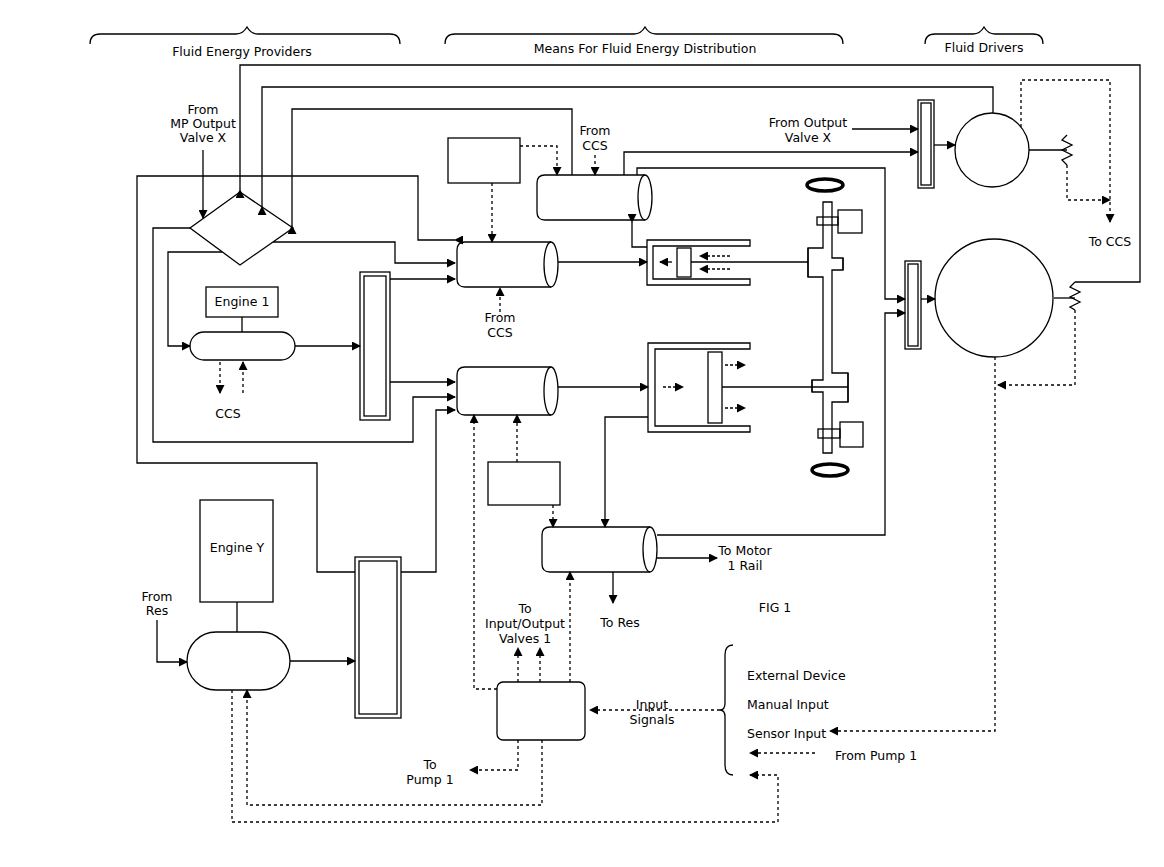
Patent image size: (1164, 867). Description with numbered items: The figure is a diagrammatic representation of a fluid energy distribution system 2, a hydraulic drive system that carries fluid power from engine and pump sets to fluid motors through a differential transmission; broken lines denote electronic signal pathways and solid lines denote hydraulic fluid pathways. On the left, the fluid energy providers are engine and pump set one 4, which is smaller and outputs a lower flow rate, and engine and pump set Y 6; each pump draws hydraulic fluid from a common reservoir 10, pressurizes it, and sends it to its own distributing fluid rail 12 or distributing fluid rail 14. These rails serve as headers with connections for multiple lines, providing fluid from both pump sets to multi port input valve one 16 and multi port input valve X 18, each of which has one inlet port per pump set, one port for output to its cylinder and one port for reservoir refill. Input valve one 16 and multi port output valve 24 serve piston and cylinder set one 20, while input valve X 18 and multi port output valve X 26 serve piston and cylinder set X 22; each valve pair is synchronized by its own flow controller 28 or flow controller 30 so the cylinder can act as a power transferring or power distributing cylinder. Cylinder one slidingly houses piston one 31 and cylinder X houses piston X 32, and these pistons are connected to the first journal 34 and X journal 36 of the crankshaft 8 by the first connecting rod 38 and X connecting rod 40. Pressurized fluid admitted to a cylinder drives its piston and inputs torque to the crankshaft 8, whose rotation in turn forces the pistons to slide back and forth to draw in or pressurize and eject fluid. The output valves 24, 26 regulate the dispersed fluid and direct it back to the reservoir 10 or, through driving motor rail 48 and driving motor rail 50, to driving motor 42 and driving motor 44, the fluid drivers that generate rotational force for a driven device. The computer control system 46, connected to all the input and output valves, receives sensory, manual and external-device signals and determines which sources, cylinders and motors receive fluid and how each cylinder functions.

The fluid energy distribution system 2 is at (1035, 505).
The engine and pump set one 4 is at (272, 362).
The engine and pump set Y 6 is at (265, 692).
The crankshaft 8 is at (823, 332).
The reservoir 10 is at (267, 250).
The distributing fluid rail 12 is at (390, 349).
The distributing fluid rail 14 is at (401, 631).
The multi port input valve one 16 is at (518, 288).
The multi port input valve X 18 is at (540, 417).
The piston and cylinder set one 20 is at (740, 287).
The piston and cylinder set X 22 is at (745, 434).
The multi port output valve 24 is at (653, 197).
The multi port output valve X 26 is at (636, 528).
The flow controller 28 is at (447, 167).
The flow controller 30 is at (520, 505).
The piston one 31 is at (680, 264).
The piston X 32 is at (715, 393).
The first journal 34 is at (843, 264).
The X journal 36 is at (836, 377).
The first connecting rod 38 is at (797, 257).
The X connecting rod 40 is at (797, 385).
The driving motor 42 is at (1024, 130).
The driving motor 44 is at (1040, 258).
The computer control system 46 is at (587, 727).
The driving motor rail 48 is at (925, 189).
The driving motor rail 50 is at (912, 350).